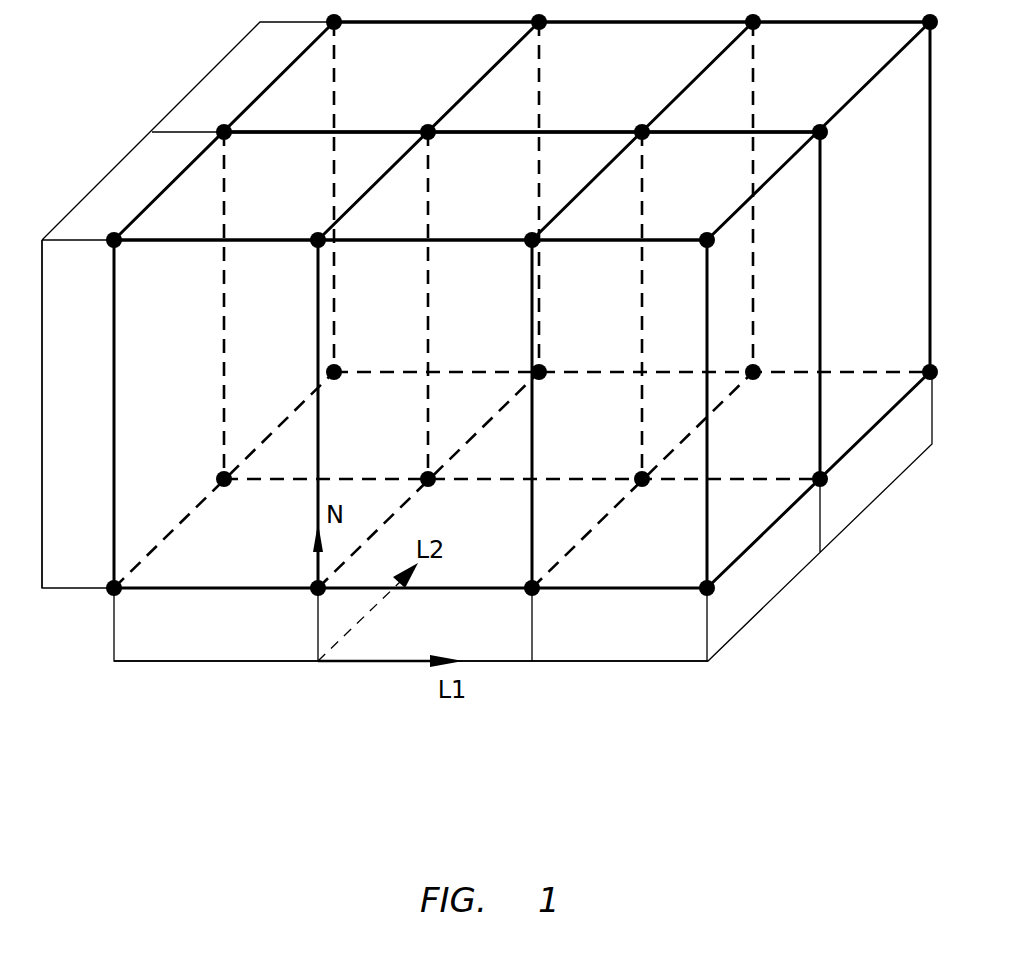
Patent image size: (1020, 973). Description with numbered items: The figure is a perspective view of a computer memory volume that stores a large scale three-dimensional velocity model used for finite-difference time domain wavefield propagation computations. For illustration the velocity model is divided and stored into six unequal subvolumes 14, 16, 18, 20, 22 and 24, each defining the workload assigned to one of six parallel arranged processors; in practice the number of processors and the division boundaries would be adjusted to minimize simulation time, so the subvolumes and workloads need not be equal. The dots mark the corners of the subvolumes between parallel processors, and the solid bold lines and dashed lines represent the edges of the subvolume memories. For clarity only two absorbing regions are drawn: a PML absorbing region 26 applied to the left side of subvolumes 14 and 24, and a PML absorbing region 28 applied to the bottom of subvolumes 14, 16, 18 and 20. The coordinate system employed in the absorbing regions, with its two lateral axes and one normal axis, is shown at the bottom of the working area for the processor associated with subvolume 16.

The subvolume 14 is at (242, 200).
The subvolume 16 is at (463, 200).
The subvolume 18 is at (658, 200).
The subvolume 20 is at (770, 95).
The subvolume 22 is at (575, 95).
The subvolume 24 is at (362, 95).
The PML absorbing region 26 is at (58, 403).
The PML absorbing region 28 is at (196, 638).